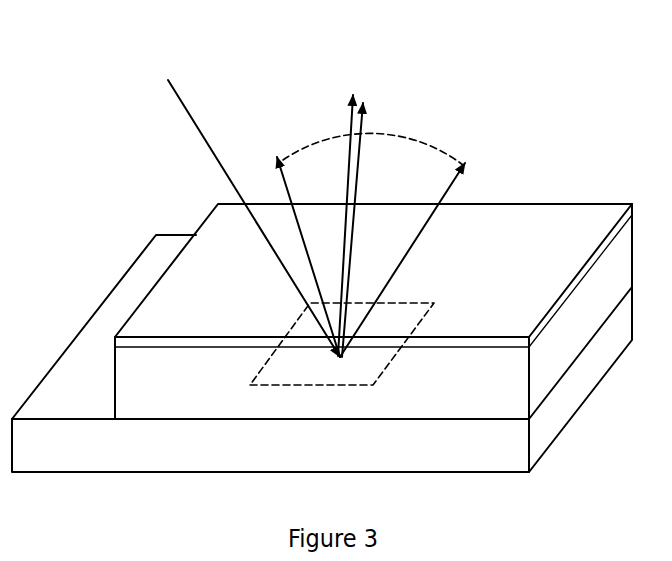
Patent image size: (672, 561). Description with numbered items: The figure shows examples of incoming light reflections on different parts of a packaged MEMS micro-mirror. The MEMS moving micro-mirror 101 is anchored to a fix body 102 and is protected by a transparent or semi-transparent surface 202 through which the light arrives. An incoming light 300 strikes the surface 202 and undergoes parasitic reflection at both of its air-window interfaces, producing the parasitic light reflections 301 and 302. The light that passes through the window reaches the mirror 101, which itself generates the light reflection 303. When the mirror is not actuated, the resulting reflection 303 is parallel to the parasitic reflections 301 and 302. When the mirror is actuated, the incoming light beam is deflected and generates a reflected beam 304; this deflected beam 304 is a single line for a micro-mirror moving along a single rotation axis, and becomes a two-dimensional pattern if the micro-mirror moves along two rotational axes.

The MEMS moving micro-mirror 101 is at (391, 315).
The fix body 102 is at (47, 462).
The transparent or semi-transparent surface 202 is at (560, 220).
The incoming light 300 is at (168, 80).
The parasitic light reflection 301 is at (353, 95).
The parasitic light reflection 302 is at (362, 103).
The light reflection 303 is at (465, 163).
The reflected beam 304 is at (397, 133).